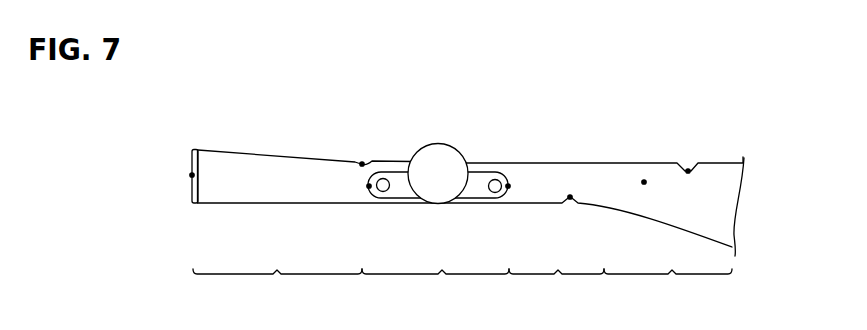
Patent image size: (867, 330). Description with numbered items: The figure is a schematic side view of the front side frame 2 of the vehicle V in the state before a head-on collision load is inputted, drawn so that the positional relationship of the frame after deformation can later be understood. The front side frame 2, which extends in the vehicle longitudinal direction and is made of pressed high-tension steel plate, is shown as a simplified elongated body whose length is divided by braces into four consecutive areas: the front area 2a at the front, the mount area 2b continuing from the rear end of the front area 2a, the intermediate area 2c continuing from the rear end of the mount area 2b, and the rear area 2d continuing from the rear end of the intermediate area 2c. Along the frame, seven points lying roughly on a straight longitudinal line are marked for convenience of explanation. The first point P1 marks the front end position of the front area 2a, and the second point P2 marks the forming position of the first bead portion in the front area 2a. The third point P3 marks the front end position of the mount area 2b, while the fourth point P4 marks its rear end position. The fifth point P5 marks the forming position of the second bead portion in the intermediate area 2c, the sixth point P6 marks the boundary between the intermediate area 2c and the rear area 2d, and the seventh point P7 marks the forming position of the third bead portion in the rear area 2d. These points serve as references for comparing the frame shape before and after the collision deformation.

The front side frame 2 is at (576, 108).
The vehicle V is at (693, 64).
The first point P1 is at (192, 175).
The second point P2 is at (362, 164).
The third point P3 is at (369, 186).
The fourth point P4 is at (508, 186).
The fifth point P5 is at (570, 199).
The sixth point P6 is at (644, 182).
The seventh point P7 is at (688, 170).
The front area 2a is at (277, 288).
The mount area 2b is at (435, 288).
The intermediate area 2c is at (556, 288).
The rear area 2d is at (668, 288).